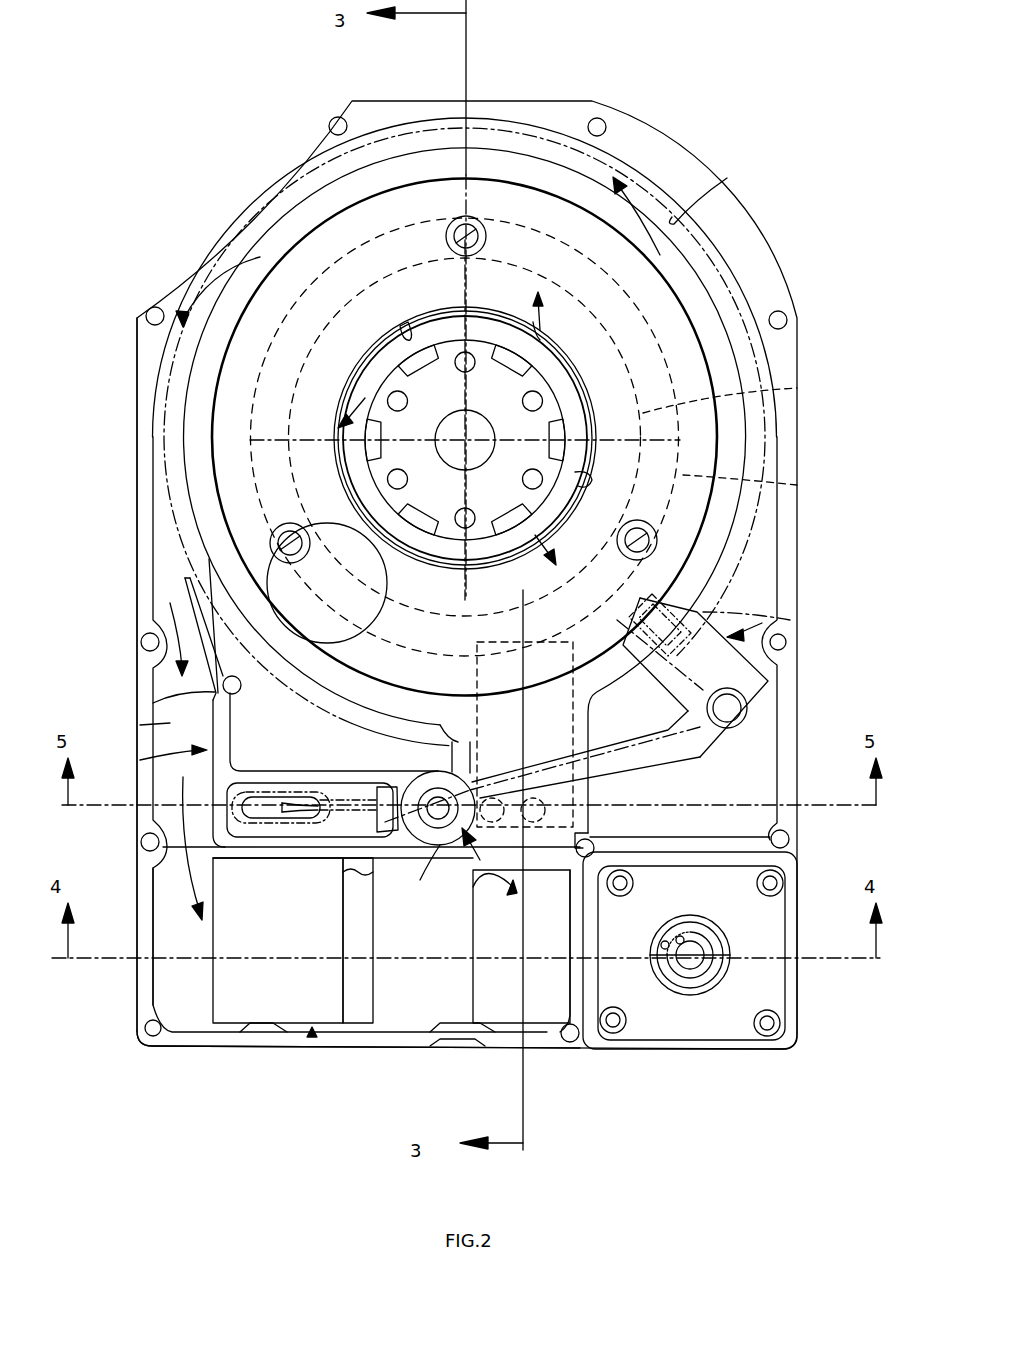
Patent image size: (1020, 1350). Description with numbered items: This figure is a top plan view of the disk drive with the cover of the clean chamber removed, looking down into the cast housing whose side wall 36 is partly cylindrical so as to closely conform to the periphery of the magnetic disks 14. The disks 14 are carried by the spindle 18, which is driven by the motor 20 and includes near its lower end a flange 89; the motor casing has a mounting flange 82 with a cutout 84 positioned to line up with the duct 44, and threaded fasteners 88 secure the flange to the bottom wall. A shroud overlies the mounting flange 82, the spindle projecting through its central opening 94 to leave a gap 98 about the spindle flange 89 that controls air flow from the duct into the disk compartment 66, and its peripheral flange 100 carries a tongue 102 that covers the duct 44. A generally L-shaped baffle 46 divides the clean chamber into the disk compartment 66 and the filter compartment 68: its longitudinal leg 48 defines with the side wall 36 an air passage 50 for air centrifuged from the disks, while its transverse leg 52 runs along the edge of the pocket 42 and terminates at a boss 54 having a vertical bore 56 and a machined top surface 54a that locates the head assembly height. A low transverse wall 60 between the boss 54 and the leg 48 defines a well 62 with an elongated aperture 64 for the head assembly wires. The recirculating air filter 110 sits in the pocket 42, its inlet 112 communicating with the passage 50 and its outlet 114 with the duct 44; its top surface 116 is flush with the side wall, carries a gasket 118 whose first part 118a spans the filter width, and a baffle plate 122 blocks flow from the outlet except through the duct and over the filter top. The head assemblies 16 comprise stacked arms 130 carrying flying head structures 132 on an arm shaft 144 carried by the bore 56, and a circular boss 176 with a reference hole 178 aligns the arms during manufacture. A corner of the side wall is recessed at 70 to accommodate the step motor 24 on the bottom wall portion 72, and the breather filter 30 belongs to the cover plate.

The magnetic disks 14 is at (713, 268).
The head assemblies 16 is at (770, 628).
The spindle 18 is at (570, 385).
The motor 20 is at (797, 388).
The step motor 24 is at (795, 1000).
The breather filter 30 is at (387, 590).
The side wall 36 is at (130, 598).
The pocket 42 is at (170, 968).
The duct 44 is at (445, 697).
The baffle 46 is at (140, 762).
The leg 48 is at (165, 693).
The air passage 50 is at (170, 728).
The leg 52 is at (265, 850).
The boss 54 is at (468, 785).
The top surface 54a is at (470, 787).
The vertical bore 56 is at (431, 858).
The transverse wall 60 is at (330, 772).
The well 62 is at (360, 790).
The elongated aperture 64 is at (258, 805).
The disk compartment 66 is at (760, 565).
The filter compartment 68 is at (202, 1002).
The recess 70 is at (705, 870).
The wall portion 72 is at (590, 1045).
The mounting flange 82 is at (797, 485).
The cutout 84 is at (465, 437).
The threaded fasteners 88 is at (486, 238).
The flange 89 is at (590, 478).
The central opening 94 is at (404, 320).
The gap 98 is at (560, 370).
The peripheral flange 100 is at (735, 540).
The tongue 102 is at (592, 815).
The recirculating air filter 110 is at (312, 1037).
The inlet 112 is at (210, 988).
The outlet 114 is at (475, 1000).
The top surface 116 is at (380, 990).
The gasket 118 is at (380, 1000).
The first part 118a is at (355, 925).
The baffle plate 122 is at (505, 862).
The arms 130 is at (665, 770).
The flying head structures 132 is at (770, 585).
The arm shaft 144 is at (472, 887).
The circular boss 176 is at (750, 722).
The reference hole 178 is at (730, 700).